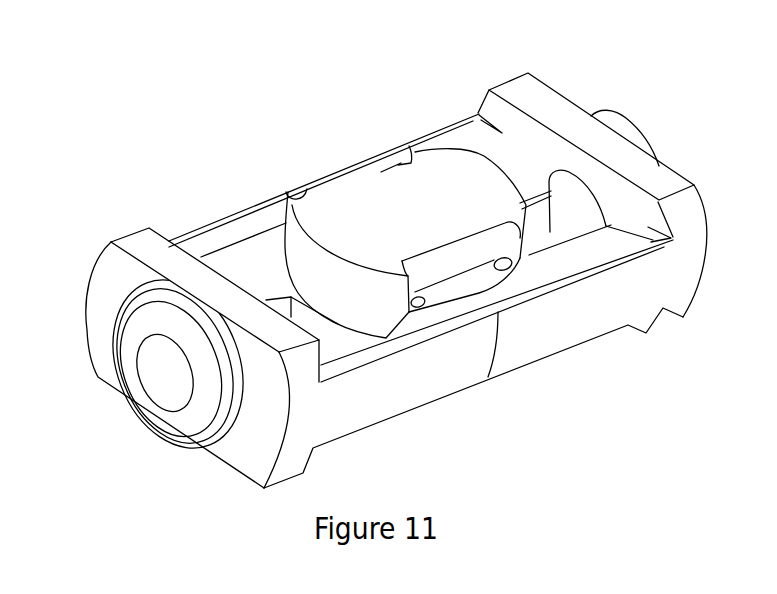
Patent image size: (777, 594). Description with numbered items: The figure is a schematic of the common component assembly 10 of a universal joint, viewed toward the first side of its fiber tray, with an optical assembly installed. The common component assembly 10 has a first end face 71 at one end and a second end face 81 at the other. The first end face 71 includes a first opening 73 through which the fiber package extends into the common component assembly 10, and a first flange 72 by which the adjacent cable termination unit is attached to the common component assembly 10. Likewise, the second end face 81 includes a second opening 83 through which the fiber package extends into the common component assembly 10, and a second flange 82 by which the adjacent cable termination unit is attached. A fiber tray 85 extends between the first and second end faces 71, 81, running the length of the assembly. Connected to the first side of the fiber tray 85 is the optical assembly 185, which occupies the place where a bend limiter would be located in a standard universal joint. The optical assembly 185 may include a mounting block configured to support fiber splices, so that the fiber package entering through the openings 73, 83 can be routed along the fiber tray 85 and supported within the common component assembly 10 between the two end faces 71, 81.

The common component assembly 10 is at (143, 246).
The first end face 71 is at (247, 452).
The first flange 72 is at (150, 408).
The first opening 73 is at (163, 368).
The second end face 81 is at (563, 95).
The second flange 82 is at (636, 121).
The second opening 83 is at (570, 203).
The fiber tray 85 is at (251, 260).
The optical assembly 185 is at (431, 154).